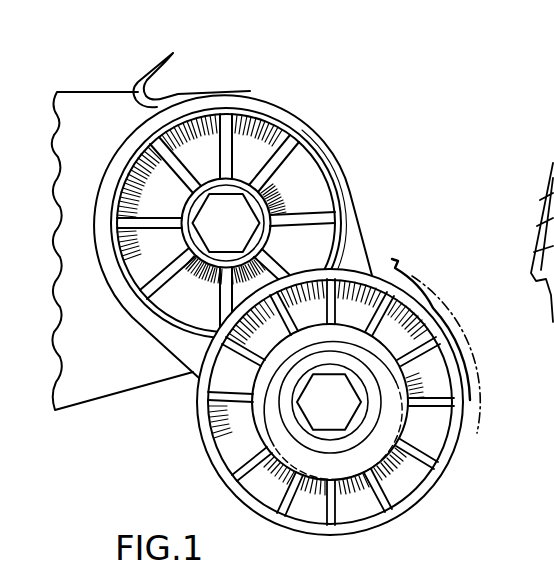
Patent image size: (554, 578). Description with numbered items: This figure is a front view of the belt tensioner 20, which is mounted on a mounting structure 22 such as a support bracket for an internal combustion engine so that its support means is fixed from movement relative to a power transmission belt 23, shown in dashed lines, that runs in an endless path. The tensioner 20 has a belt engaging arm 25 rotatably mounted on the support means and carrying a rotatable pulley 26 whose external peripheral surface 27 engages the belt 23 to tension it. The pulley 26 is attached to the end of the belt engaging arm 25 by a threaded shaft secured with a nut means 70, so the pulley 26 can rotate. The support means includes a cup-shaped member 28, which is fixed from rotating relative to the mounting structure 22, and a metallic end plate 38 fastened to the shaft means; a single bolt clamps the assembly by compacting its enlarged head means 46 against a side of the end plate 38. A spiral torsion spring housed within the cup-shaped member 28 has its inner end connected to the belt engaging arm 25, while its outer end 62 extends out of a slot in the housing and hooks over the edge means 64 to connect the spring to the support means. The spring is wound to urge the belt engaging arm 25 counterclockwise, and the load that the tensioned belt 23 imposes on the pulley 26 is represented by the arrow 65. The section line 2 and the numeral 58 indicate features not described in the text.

The section line 2- 2 is at (82, 40).
The belt tensioner 20 is at (332, 122).
The mounting structure 22 is at (83, 387).
The power transmission belt 23 is at (480, 432).
The belt engaging arm 25 is at (362, 242).
The pulley 26 is at (257, 477).
The external peripheral surface 27 is at (202, 435).
The end plate 38 is at (303, 190).
The enlarged head means 46 is at (208, 230).
The outer end 62 is at (162, 52).
The edge means 64 is at (157, 86).
The arrow 65 is at (457, 350).
The nut means 70 is at (328, 420).
The cup-shaped member 28 is at (460, 572).
The fastener 58 is at (536, 571).